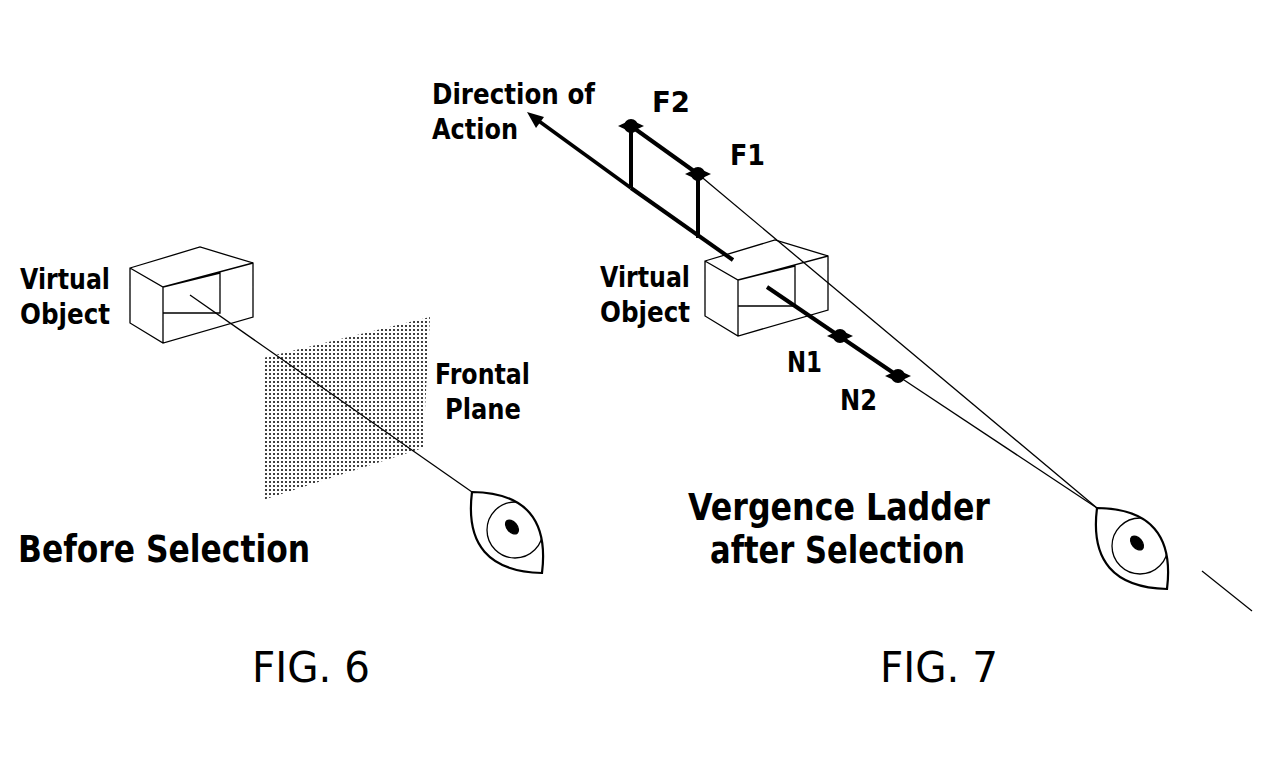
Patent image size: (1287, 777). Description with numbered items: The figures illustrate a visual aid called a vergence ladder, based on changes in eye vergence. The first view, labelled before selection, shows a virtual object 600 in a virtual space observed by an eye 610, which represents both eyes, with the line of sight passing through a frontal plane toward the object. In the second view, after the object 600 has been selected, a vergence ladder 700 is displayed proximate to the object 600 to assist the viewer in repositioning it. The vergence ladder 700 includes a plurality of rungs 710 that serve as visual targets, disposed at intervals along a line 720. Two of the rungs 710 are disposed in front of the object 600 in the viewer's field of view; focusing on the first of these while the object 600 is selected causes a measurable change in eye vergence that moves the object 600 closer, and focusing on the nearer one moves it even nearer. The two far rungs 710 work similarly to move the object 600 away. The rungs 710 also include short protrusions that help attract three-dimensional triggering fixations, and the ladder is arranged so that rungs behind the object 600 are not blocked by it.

In FIG. 6, the virtual object 600 is at (210, 254).
In FIG. 7, the virtual object 600 is at (798, 251).
In FIG. 6, the eye 610 is at (517, 494).
In FIG. 7, the eye 610 is at (1142, 512).
In FIG. 7, the vergence ladder 700 is at (693, 133).
In FIG. 7, the rungs 710 is at (910, 377).
In FIG. 7, the line 720 is at (673, 225).